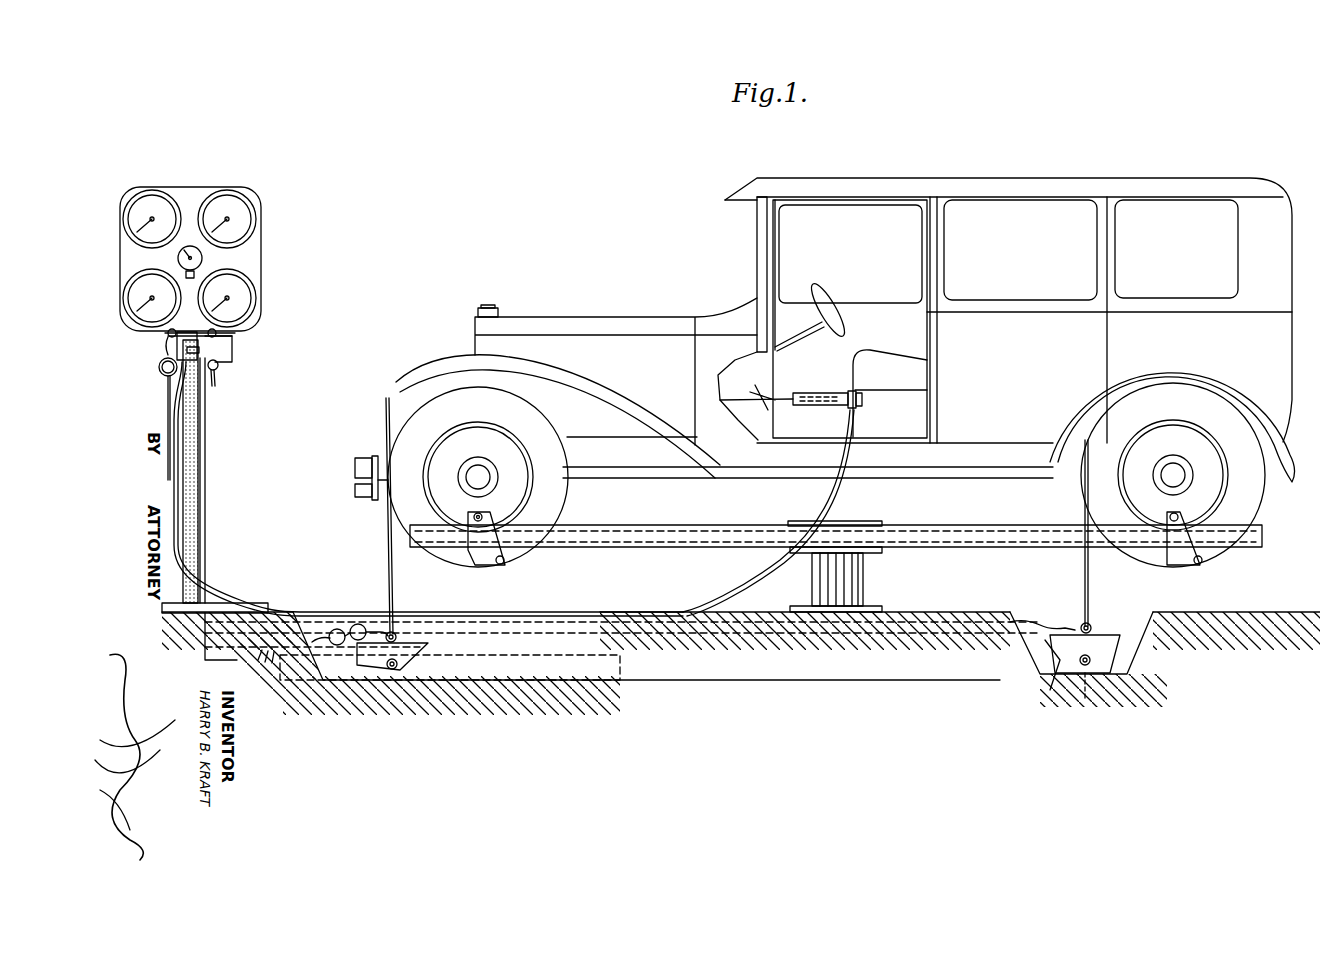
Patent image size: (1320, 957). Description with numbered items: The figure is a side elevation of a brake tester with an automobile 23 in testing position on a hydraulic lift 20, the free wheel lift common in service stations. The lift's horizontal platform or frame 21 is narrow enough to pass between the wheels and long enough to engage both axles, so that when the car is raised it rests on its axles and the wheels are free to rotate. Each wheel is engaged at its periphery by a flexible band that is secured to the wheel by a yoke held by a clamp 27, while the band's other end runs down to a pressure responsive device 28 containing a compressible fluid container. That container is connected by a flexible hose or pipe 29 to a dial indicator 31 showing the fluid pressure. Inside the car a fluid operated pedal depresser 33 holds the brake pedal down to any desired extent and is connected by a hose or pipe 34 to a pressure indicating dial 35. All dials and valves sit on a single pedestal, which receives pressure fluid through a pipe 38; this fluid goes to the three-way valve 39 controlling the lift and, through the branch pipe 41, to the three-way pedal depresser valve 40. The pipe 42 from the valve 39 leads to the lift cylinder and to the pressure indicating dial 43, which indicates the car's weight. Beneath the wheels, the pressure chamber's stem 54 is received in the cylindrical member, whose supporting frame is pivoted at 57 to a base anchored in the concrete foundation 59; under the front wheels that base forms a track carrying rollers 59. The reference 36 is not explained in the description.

The hydraulic lift 20 is at (865, 580).
The horizontal platform or frame 21 is at (680, 528).
The automobile 23 is at (845, 330).
The clamp 27 is at (490, 512).
The pressure responsive device 28 is at (1150, 648).
The flexible hose or pipe 29 is at (342, 625).
The dial indicator 31 is at (147, 200).
The fluid operated pedal depresser 33 is at (808, 392).
The hose or pipe 34 is at (230, 560).
The pressure indicating dial 35 is at (160, 370).
The anchor 36 is at (263, 663).
The pipe 38 is at (207, 430).
The 3-way valve 39 is at (166, 345).
The 3-way pedal depresser valve 40 is at (221, 370).
The branch pipe 41 is at (234, 348).
The pipe 42 is at (166, 397).
The pressure indicating dial 43 is at (202, 256).
The stem 54 is at (390, 655).
The pivot 57 is at (392, 672).
The concrete foundation 59 is at (1050, 690).